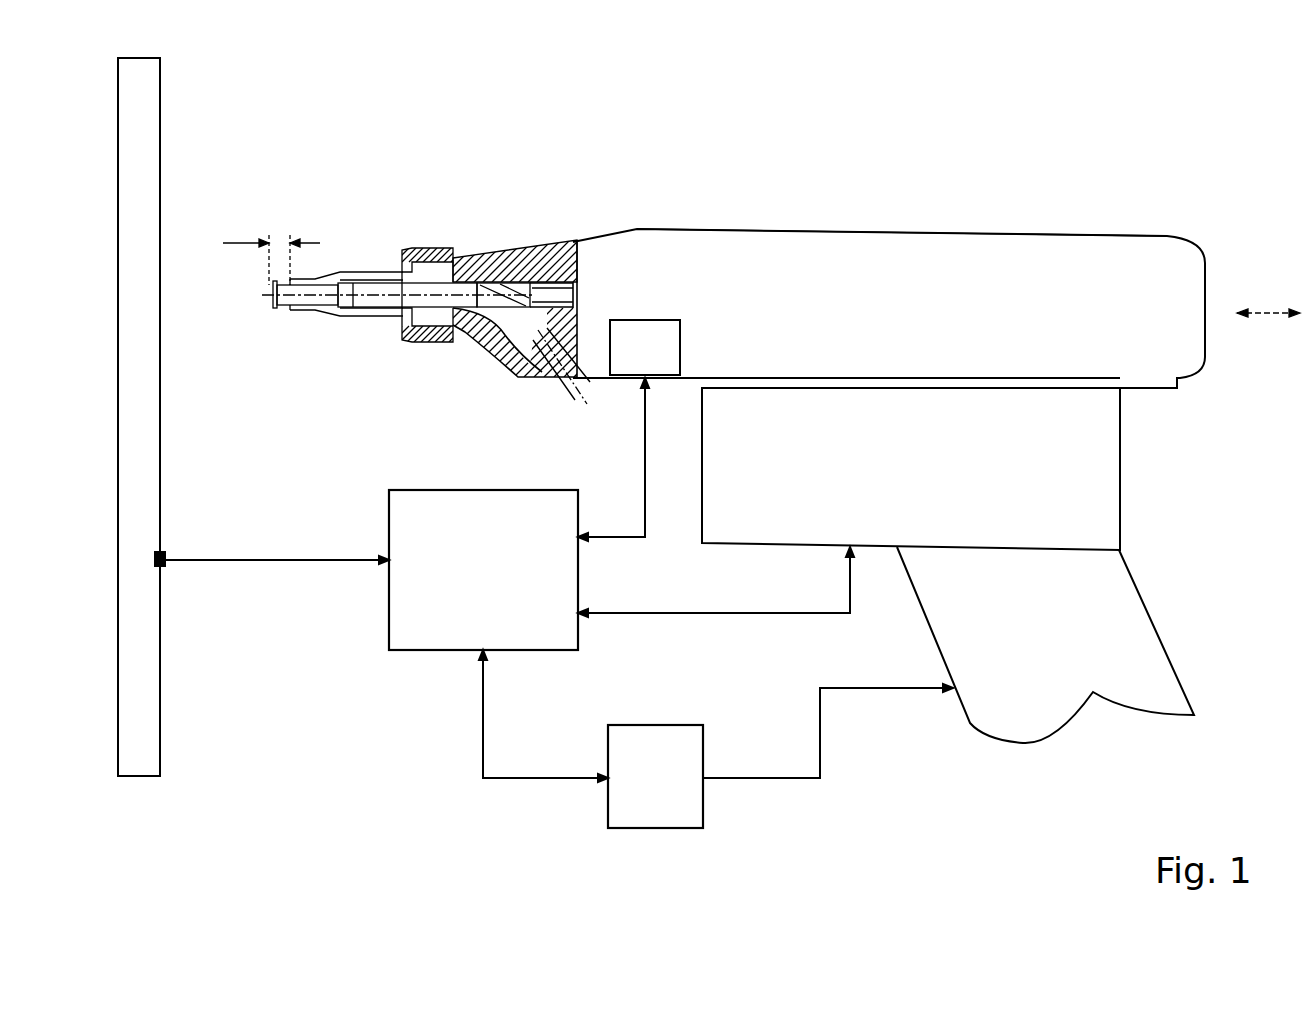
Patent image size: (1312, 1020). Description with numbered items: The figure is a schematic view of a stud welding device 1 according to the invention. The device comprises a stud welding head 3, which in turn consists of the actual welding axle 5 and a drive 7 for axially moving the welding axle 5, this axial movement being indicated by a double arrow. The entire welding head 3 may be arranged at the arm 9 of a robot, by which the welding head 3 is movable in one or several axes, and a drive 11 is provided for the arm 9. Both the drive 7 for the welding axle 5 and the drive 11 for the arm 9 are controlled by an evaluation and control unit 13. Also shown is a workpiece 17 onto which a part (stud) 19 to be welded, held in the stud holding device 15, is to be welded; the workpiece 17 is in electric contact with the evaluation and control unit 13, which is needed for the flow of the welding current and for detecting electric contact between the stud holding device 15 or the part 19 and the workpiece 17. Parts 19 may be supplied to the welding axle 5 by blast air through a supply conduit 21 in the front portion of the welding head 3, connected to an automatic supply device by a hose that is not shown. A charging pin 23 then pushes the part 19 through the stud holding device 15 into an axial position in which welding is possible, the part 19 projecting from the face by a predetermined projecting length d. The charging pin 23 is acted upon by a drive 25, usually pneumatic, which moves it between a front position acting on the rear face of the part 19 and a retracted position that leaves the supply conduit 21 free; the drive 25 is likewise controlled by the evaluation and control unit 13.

The stud welding device 1 is at (693, 184).
The stud welding head 3 is at (1015, 230).
The welding axle 5 is at (900, 240).
The drive 7 is at (1098, 461).
The arm 9 is at (1131, 631).
The drive 11 is at (655, 776).
The evaluation and control unit 13 is at (483, 570).
The stud holding device 15 is at (350, 276).
The workpiece 17 is at (159, 455).
The part to be welded 19 is at (298, 300).
The supply conduit 21 is at (520, 323).
The charging pin 23 is at (387, 300).
The drive 25 is at (645, 347).